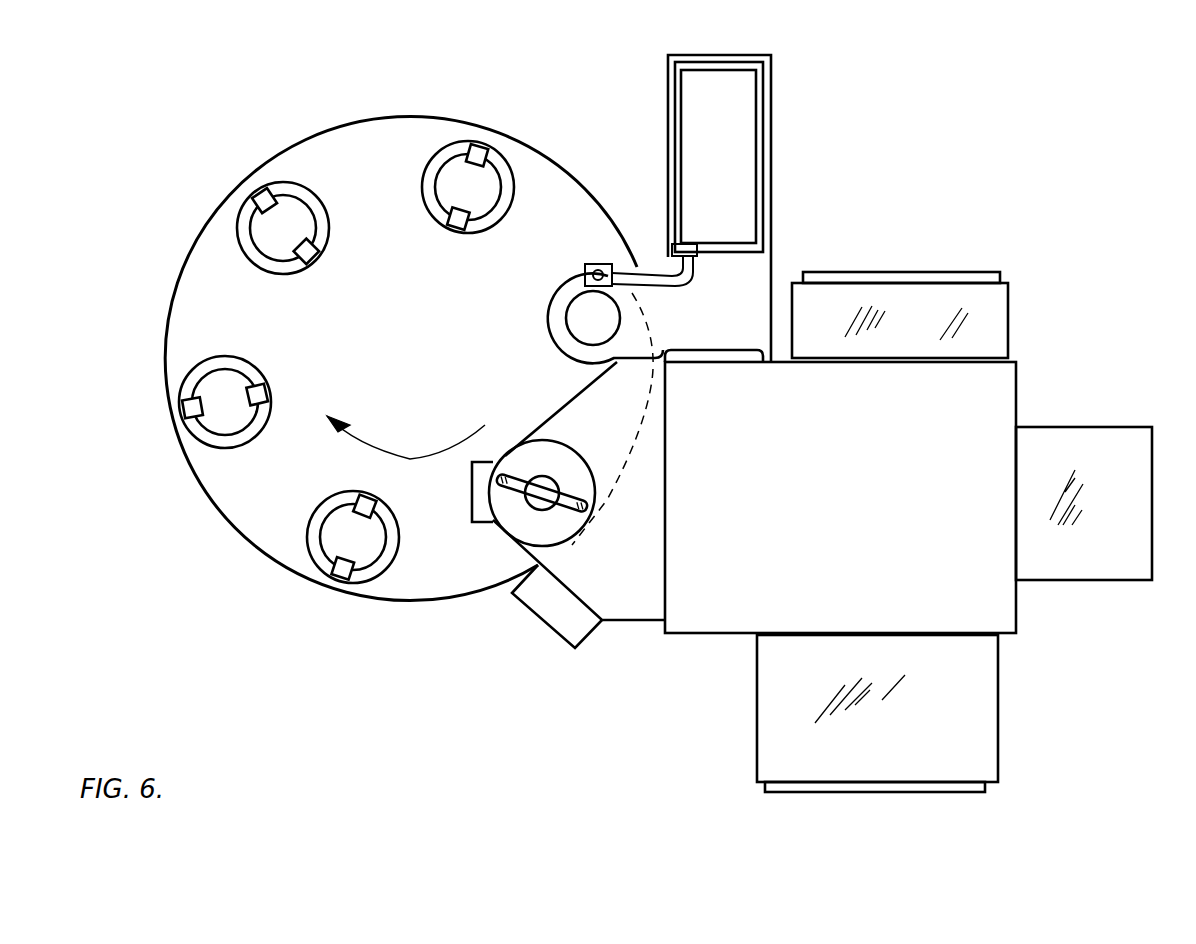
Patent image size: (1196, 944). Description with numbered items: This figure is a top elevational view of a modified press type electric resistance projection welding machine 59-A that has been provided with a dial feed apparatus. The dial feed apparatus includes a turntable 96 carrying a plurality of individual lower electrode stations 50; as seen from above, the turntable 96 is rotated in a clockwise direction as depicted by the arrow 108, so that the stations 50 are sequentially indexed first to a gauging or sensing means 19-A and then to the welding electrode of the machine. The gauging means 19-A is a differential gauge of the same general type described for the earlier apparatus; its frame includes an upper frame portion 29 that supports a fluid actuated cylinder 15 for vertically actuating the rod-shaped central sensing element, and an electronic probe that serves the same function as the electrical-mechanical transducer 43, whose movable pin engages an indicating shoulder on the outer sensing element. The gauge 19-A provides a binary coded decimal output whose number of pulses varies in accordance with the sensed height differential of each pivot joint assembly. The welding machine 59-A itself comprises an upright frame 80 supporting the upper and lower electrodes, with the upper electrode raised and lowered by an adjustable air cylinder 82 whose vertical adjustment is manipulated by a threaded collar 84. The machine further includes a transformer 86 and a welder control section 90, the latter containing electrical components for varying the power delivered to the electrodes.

The turntable 96 is at (410, 121).
The lower electrode stations 50 is at (283, 210).
The arrow 108 is at (430, 455).
The fluid actuated cylinder 15 is at (600, 325).
The electrical-mechanical transducer 43 is at (598, 262).
The gauging or sensing means 19-A is at (747, 135).
The welding machine 59-A is at (703, 363).
The upper frame portion 29 is at (768, 268).
The upright frame 80 is at (1020, 358).
The transformer 86 is at (1082, 437).
The welder control section 90 is at (778, 697).
The threaded collar 84 is at (575, 500).
The adjustable air cylinder 82 is at (526, 538).